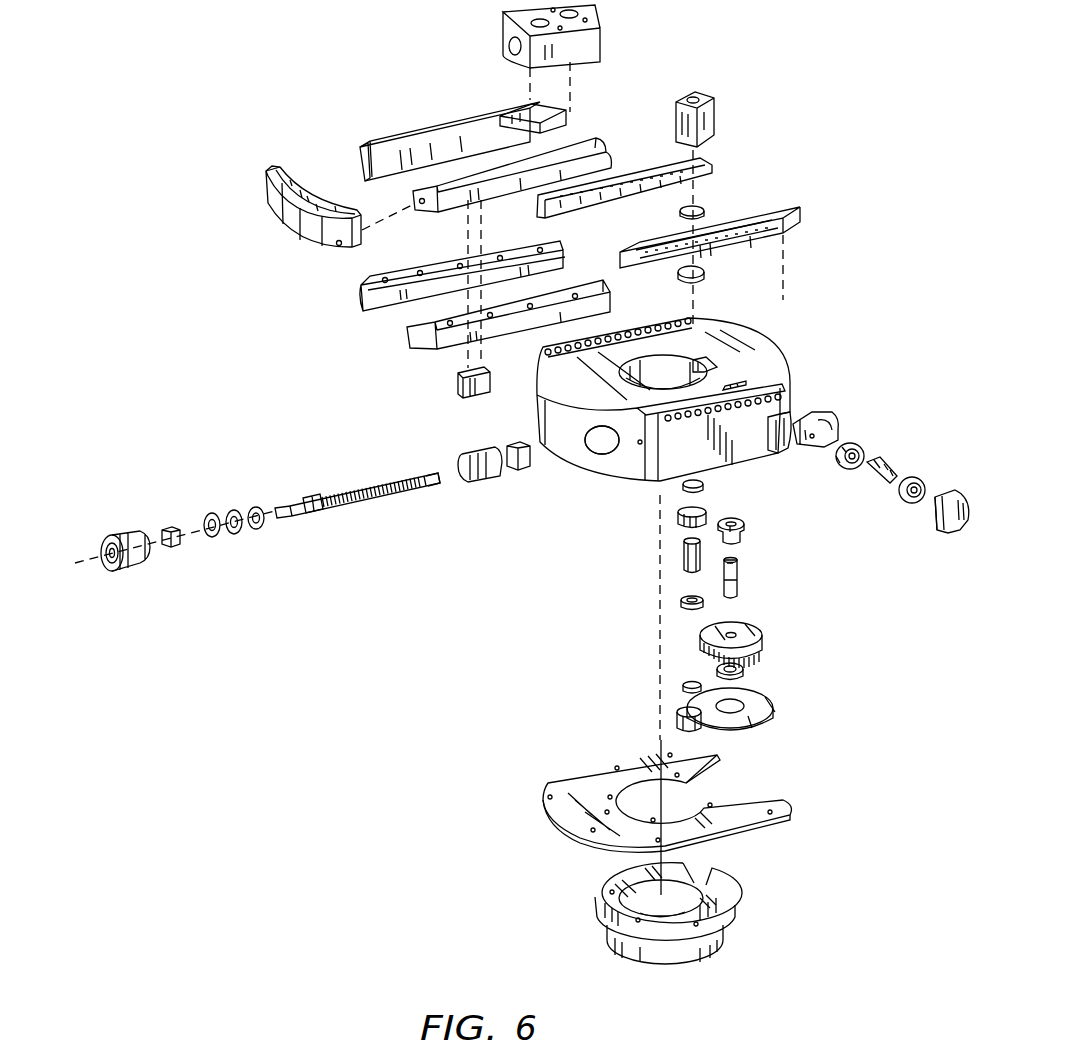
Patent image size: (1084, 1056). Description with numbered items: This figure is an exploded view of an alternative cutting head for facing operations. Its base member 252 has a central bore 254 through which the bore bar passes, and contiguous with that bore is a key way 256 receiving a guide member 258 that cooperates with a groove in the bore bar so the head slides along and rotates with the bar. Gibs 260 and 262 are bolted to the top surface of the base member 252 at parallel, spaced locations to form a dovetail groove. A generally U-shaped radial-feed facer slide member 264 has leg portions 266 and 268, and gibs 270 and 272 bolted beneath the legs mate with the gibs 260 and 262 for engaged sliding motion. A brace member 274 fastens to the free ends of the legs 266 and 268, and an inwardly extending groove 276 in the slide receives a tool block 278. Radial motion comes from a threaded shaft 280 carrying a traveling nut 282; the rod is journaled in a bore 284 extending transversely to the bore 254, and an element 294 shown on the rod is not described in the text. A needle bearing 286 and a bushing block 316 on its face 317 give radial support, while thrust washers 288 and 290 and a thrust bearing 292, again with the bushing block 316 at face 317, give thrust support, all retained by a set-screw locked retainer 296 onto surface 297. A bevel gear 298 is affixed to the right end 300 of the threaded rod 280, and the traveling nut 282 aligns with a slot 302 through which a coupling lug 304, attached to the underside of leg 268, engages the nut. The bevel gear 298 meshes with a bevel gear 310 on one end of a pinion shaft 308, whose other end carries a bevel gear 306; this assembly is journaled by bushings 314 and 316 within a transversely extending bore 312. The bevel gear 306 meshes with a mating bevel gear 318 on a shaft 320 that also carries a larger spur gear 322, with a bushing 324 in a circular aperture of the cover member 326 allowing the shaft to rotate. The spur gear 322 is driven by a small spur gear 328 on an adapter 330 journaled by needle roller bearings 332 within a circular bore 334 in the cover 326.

The base member 252 is at (740, 468).
The central bore 254 is at (672, 367).
The key way 256 is at (717, 366).
The guide member 258 is at (700, 92).
The gib 260 is at (757, 212).
The gib 262 is at (657, 165).
The radial-feed facer slide member 264 is at (483, 118).
The leg portion 266 is at (393, 138).
The leg portion 268 is at (462, 205).
The gib 270 is at (357, 285).
The gib 272 is at (405, 330).
The brace member 274 is at (265, 178).
The inwardly extending groove 276 is at (572, 135).
The tool block 278 is at (497, 22).
The threaded shaft 280 is at (350, 505).
The traveling nut 282 is at (462, 455).
The bore 284 is at (610, 460).
The needle bearing 286 is at (171, 527).
The thrust washer 288 is at (212, 535).
The thrust washer 290 is at (262, 524).
The thrust bearing 292 is at (236, 530).
The collar 294 is at (305, 512).
The set-screw locked retainer 296 is at (128, 545).
The surface 297 is at (125, 560).
The bevel gear 298 is at (510, 448).
The right end 300 is at (440, 490).
The slot 302 is at (735, 388).
The coupling lug 304 is at (455, 382).
The bevel gear 306 is at (855, 446).
The pinion shaft 308 is at (882, 465).
The bevel gear 310 is at (898, 500).
The transversely extending bore 312 is at (772, 445).
The bushing 314 is at (812, 410).
The bushing block 316 is at (950, 530).
The face 317 is at (935, 500).
The bevel gear 318 is at (747, 525).
The shaft 320 is at (738, 572).
The spur gear 322 is at (765, 636).
The bushing 324 is at (745, 670).
The cover member 326 is at (775, 706).
The spur gear 328 is at (683, 522).
The adapter 330 is at (683, 558).
The needle roller bearings 332 is at (683, 606).
The circular bore 334 is at (678, 715).